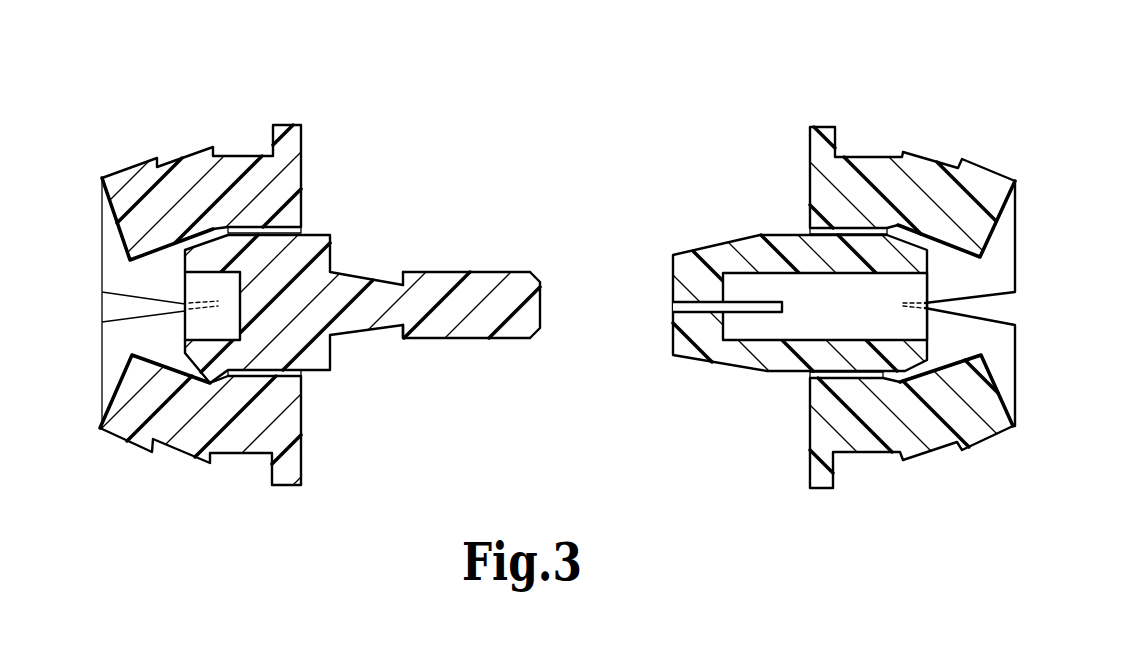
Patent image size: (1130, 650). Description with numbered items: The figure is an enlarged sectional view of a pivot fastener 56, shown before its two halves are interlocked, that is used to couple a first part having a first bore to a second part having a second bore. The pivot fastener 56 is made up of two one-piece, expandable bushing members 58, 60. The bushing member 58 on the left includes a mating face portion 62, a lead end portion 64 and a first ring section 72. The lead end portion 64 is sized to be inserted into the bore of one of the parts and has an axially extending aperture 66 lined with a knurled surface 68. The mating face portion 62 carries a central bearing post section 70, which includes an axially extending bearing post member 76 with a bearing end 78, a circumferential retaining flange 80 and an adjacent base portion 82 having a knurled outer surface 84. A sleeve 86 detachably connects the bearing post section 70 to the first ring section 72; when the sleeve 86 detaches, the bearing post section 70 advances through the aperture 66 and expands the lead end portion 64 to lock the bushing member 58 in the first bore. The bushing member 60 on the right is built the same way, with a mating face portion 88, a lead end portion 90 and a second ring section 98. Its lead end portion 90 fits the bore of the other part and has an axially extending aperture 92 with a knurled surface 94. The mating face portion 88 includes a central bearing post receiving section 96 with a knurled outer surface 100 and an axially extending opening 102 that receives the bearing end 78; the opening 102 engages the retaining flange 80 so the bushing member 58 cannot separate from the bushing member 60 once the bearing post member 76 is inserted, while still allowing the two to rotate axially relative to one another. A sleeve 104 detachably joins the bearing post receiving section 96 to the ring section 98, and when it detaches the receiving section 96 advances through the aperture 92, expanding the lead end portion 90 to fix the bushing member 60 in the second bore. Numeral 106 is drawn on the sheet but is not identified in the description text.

The pivot fastener 56 is at (540, 158).
The bushing member 58 is at (197, 118).
The bushing member 60 is at (906, 102).
The mating face portion 62 is at (318, 447).
The lead end portion 64 is at (92, 432).
The axially extending aperture 66 is at (122, 272).
The knurled surface 68 is at (152, 356).
The central bearing post section 70 is at (330, 252).
The first ring section 72 is at (293, 178).
The axially extending bearing post member 76 is at (500, 338).
The bearing end 78 is at (542, 296).
The circumferential retaining flange 80 is at (403, 338).
The base portion 82 is at (318, 356).
The knurled outer surface 84 is at (288, 377).
The sleeve 86 is at (223, 228).
The mating face portion 88 is at (790, 417).
The lead end portion 90 is at (1030, 201).
The axially extending aperture 92 is at (965, 362).
The knurled surface 94 is at (972, 262).
The central bearing post receiving section 96 is at (775, 257).
The second ring section 98 is at (822, 186).
The knurled outer surface 100 is at (850, 230).
The axially extending opening 102 is at (683, 327).
The sleeve 104 is at (890, 381).
The ledge 106 is at (862, 378).